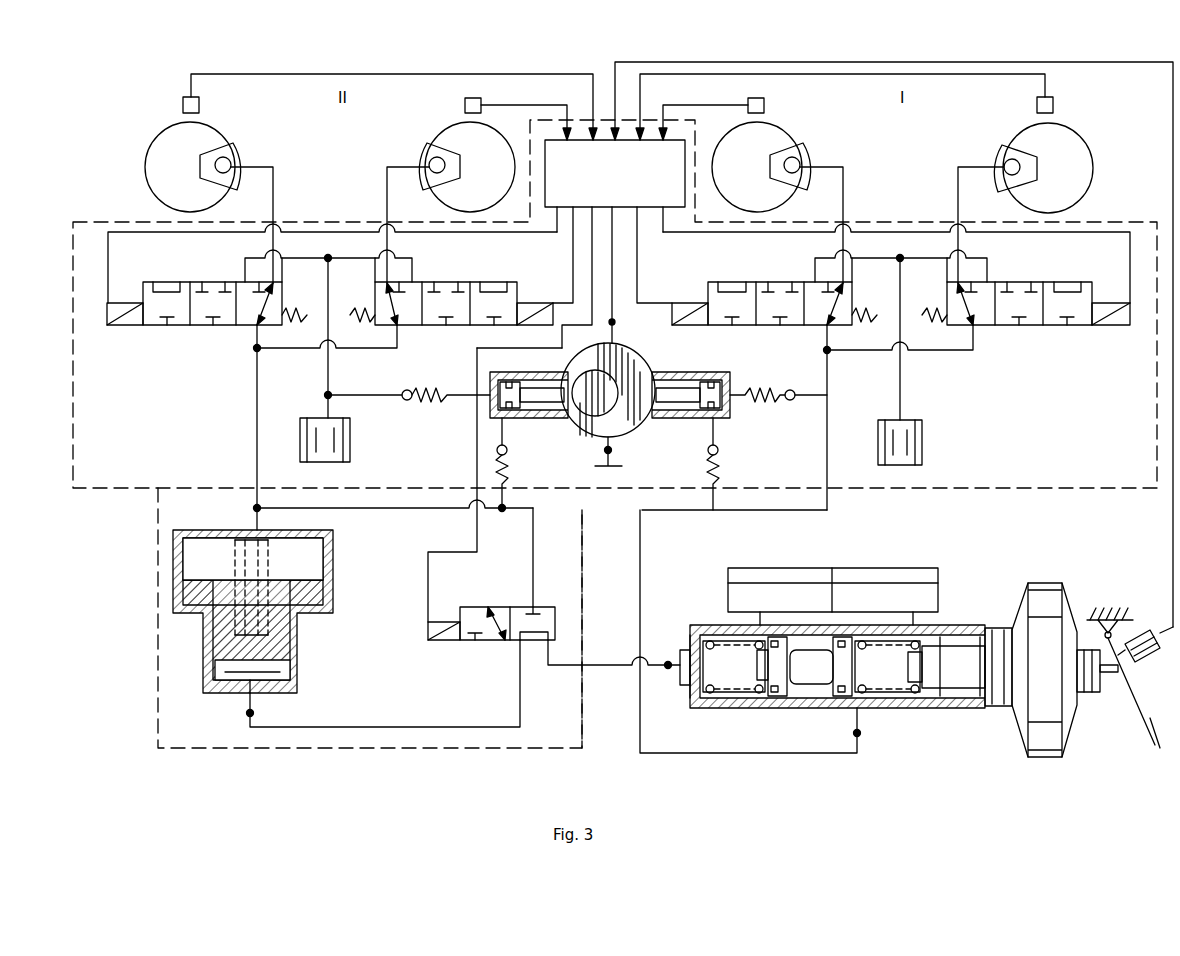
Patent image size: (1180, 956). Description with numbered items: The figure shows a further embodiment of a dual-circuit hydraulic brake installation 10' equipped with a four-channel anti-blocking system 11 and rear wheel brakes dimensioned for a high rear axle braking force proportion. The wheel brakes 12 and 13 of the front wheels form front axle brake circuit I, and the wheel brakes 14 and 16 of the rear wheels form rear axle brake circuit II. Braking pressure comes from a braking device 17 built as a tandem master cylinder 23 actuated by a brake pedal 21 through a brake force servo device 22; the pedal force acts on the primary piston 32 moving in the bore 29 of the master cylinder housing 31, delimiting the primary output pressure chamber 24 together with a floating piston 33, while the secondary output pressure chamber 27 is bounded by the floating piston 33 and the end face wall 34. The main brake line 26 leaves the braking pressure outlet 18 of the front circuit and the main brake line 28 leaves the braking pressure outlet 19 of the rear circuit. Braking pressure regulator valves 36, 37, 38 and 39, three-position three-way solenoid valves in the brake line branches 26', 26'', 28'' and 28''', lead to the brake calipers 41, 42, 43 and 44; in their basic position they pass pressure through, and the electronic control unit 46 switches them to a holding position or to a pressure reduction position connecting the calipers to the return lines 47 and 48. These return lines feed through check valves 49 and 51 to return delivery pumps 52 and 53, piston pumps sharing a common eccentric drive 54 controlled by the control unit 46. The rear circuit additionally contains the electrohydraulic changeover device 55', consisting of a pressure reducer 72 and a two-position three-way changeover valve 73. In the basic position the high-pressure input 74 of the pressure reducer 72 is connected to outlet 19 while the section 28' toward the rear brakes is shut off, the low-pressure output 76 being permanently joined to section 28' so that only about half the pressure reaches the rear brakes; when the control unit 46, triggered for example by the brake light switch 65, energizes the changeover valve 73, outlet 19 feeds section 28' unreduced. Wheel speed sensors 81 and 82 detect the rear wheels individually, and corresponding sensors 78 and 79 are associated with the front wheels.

The brake installation 10' is at (615, 283).
The anti-blocking system 11 is at (135, 460).
The wheel brake 12 is at (778, 145).
The wheel brake 13 is at (1025, 140).
The wheel brake 14 is at (213, 143).
The wheel brake 16 is at (446, 143).
The braking device 17 is at (1006, 630).
The braking pressure outlet 18 is at (859, 735).
The braking pressure outlet 19 is at (667, 660).
The brake pedal 21 is at (1127, 695).
The brake force servo device 22 is at (1053, 600).
The tandem master cylinder 23 is at (838, 704).
The primary output pressure chamber 24 is at (936, 668).
The main brake line 26 is at (753, 521).
The brake line branch 26' is at (850, 417).
The brake line branch 26'' is at (900, 340).
The secondary output pressure chamber 27 is at (727, 710).
The main brake line 28 is at (614, 671).
The section of main brake line 28' is at (395, 525).
The brake line branch 28'' is at (239, 416).
The brake line branch 28''' is at (409, 358).
The bore 29 is at (765, 710).
The master cylinder housing 31 is at (945, 635).
The primary piston 32 is at (955, 690).
The floating piston 33 is at (758, 665).
The end face wall 34 is at (692, 692).
The braking pressure regulator valve 36 is at (800, 328).
The braking pressure regulator valve 37 is at (1036, 328).
The braking pressure regulator valve 38 is at (224, 330).
The braking pressure regulator valve 39 is at (459, 328).
The brake caliper 41 is at (800, 168).
The brake caliper 42 is at (1008, 170).
The brake caliper 43 is at (232, 170).
The brake caliper 44 is at (430, 170).
The electronic control unit 46 is at (572, 212).
The return line 47 is at (922, 260).
The return line 48 is at (358, 260).
The check valve 49 is at (790, 401).
The check valve 51 is at (410, 401).
The return delivery pump 52 is at (688, 421).
The return delivery pump 53 is at (543, 421).
The eccentric drive 54 is at (628, 378).
The electrohydraulic changeover device 55' is at (604, 629).
The brake light switch 65 is at (1150, 658).
The pressure reducer 72 is at (297, 665).
The changeover valve 73 is at (489, 644).
The high-pressure input 74 is at (246, 716).
The low-pressure output 76 is at (252, 509).
The wheel speed sensor 78 is at (765, 105).
The wheel speed sensor 79 is at (1037, 105).
The wheel speed sensor 81 is at (200, 105).
The wheel speed sensor 82 is at (465, 105).